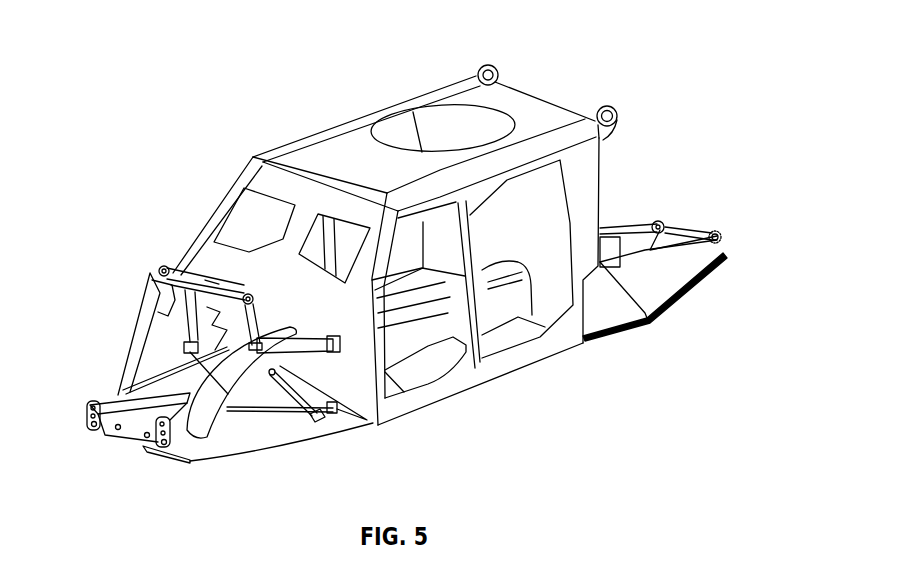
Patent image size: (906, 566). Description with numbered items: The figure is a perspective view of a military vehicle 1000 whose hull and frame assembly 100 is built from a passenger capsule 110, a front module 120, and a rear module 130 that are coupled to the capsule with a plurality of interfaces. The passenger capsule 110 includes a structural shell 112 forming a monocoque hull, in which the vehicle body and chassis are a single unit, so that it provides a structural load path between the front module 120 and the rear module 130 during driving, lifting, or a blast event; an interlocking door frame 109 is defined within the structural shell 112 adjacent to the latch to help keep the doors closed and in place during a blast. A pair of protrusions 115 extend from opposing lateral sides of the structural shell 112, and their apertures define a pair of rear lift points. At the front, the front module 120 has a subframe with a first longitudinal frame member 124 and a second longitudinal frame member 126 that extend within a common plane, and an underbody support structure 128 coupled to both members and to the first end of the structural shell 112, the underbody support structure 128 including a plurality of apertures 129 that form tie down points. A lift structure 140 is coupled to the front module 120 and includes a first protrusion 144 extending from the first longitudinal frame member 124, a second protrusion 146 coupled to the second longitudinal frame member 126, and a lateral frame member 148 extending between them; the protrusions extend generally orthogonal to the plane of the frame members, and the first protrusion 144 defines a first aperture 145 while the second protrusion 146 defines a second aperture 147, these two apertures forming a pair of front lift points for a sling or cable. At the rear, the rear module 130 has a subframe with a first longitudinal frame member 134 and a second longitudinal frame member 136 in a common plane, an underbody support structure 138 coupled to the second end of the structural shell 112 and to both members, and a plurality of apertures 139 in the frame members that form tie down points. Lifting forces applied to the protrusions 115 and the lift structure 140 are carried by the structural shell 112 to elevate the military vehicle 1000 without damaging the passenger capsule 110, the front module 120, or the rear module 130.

The military vehicle 1000 is at (120, 76).
The hull and frame assembly 100 is at (250, 177).
The interlocking door frame 109 is at (478, 342).
The passenger capsule 110 is at (482, 414).
The structural shell 112 is at (318, 150).
The protrusions 115 is at (489, 63).
The front module 120 is at (302, 454).
The first longitudinal frame member 124 is at (138, 355).
The second longitudinal frame member 126 is at (208, 395).
The underbody support structure 128 is at (170, 457).
The apertures 129 is at (78, 448).
The rear module 130 is at (676, 326).
The first longitudinal frame member 134 is at (617, 247).
The second longitudinal frame member 136 is at (690, 254).
The underbody support structure 138 is at (694, 282).
The apertures 139 is at (722, 226).
The lift structure 140 is at (247, 295).
The first protrusion 144 is at (136, 300).
The first aperture 145 is at (160, 270).
The second protrusion 146 is at (113, 387).
The second aperture 147 is at (212, 284).
The lateral frame member 148 is at (222, 351).